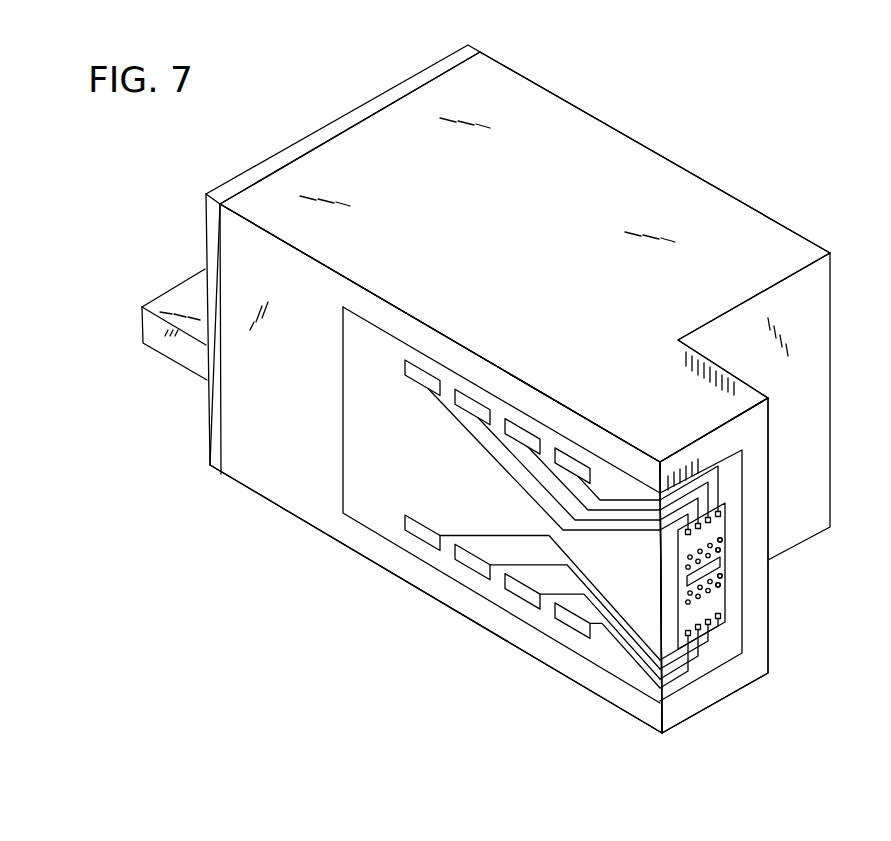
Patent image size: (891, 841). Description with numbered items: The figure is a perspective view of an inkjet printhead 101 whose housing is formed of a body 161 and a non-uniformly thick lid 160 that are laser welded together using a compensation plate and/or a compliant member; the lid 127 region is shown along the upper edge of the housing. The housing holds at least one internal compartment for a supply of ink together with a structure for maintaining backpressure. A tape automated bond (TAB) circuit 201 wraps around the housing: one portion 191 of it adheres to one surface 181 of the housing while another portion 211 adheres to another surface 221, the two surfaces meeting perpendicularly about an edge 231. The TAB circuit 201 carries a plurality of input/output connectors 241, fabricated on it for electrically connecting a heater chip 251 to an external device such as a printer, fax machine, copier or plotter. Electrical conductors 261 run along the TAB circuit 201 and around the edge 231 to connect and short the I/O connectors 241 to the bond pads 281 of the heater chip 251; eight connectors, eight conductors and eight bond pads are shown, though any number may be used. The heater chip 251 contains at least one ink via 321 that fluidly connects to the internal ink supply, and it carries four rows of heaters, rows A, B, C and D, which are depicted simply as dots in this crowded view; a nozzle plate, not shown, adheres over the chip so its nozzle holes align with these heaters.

The printhead 101 is at (720, 150).
The lid 127 is at (563, 98).
The non-uniformly thick lid 160 is at (176, 298).
The body 161 is at (536, 242).
The surface 181 is at (306, 379).
The portion of TAB circuit 191 is at (343, 307).
The tape automated bond (TAB) circuit 201 is at (343, 428).
The portion of TAB circuit 211 is at (743, 453).
The surface 221 is at (690, 705).
The edge 231 is at (660, 712).
The input/output (I/O) connectors 241 is at (422, 371).
The heater chip 251 is at (723, 495).
The electrical conductors 261 is at (485, 552).
The bond pads 281 is at (725, 513).
The ink via 321 is at (726, 568).
The row A of heaters A is at (724, 546).
The row B of heaters B is at (726, 557).
The row C of heaters C is at (726, 579).
The row D of heaters D is at (726, 590).